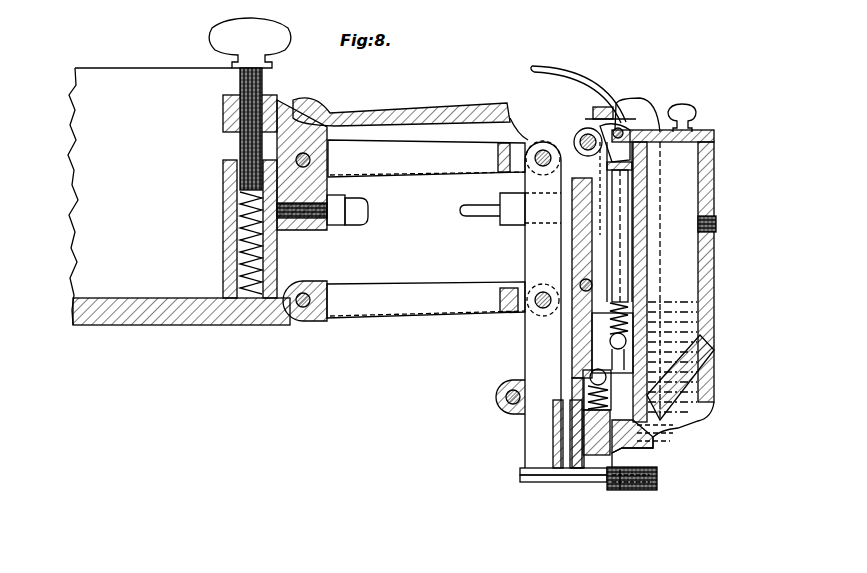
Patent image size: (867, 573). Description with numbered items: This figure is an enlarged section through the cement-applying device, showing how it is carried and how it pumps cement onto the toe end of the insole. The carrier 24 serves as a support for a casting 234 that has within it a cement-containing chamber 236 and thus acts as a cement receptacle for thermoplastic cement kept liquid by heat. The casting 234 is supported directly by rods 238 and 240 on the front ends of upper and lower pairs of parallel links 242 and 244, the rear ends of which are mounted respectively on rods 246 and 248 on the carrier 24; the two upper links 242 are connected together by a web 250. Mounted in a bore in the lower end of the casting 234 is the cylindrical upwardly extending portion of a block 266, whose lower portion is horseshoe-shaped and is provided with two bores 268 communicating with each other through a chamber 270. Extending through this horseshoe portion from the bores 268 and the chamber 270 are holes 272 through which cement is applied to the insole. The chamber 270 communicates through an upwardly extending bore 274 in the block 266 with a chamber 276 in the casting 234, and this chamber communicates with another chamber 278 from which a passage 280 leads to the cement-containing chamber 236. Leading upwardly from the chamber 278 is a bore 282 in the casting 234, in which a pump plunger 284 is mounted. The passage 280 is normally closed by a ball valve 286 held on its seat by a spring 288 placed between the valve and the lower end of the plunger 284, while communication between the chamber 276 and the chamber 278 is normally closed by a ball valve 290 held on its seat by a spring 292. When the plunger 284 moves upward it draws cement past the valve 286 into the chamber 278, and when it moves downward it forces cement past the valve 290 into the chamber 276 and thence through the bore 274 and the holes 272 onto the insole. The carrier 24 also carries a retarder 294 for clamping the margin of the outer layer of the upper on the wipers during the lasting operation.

The carrier 24 is at (148, 322).
The web 250 is at (417, 112).
The upper links 242 is at (528, 130).
The lower links 244 is at (472, 276).
The rod 246 is at (311, 160).
The rod 248 is at (311, 300).
The rod 240 is at (583, 283).
The rod 238 is at (583, 126).
The cement-containing chamber 236 is at (690, 262).
The casting 234 is at (713, 272).
The bore 282 is at (633, 211).
The pump plunger 284 is at (627, 258).
The spring 288 is at (630, 302).
The ball valve 286 is at (605, 338).
The chamber 278 is at (612, 350).
The ball valve 290 is at (596, 377).
The chamber 276 is at (503, 383).
The spring 292 is at (580, 397).
The bore 274 is at (567, 475).
The retarder 294 is at (568, 485).
The chamber 270 is at (590, 489).
The holes 272 is at (617, 492).
The bores 268 is at (643, 495).
The block 266 is at (628, 453).
The passage 280 is at (622, 357).